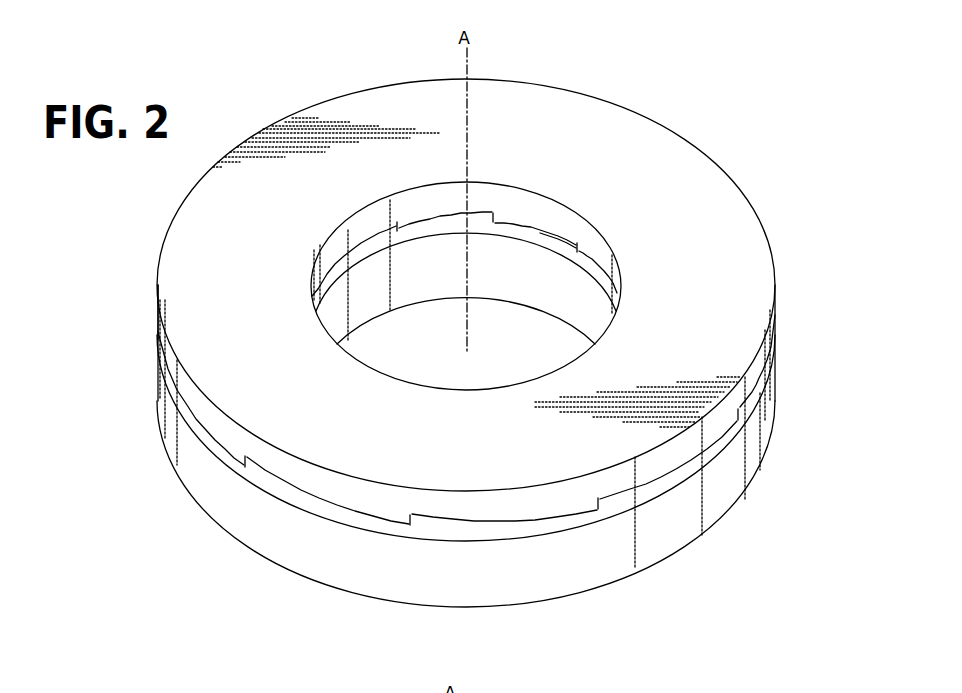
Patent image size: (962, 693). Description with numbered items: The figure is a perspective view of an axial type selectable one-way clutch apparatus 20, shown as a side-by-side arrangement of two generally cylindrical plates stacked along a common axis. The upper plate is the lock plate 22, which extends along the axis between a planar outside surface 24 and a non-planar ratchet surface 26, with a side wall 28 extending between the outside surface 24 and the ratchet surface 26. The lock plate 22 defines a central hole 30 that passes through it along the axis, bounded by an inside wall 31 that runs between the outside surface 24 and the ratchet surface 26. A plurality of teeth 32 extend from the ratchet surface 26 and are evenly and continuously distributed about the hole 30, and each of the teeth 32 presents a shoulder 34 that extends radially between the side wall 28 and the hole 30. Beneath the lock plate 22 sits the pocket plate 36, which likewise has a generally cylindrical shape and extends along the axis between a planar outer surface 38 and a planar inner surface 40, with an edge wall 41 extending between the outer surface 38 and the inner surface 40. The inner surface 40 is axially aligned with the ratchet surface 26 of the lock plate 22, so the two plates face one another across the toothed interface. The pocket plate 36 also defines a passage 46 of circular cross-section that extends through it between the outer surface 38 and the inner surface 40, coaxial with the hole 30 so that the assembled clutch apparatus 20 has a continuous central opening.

The selectable one-way clutch apparatus 20 is at (108, 264).
The lock plate 22 is at (706, 144).
The outside surface 24 is at (743, 250).
The ratchet surface 26 is at (643, 487).
The side wall 28 is at (773, 337).
The hole 30 is at (538, 207).
The inside wall 31 is at (409, 208).
The teeth 32 is at (400, 226).
The shoulder 34 is at (397, 233).
The pocket plate 36 is at (190, 511).
The outer surface 38 is at (380, 602).
The inner surface 40 is at (350, 520).
The edge wall 41 is at (607, 572).
The passage 46 is at (507, 287).